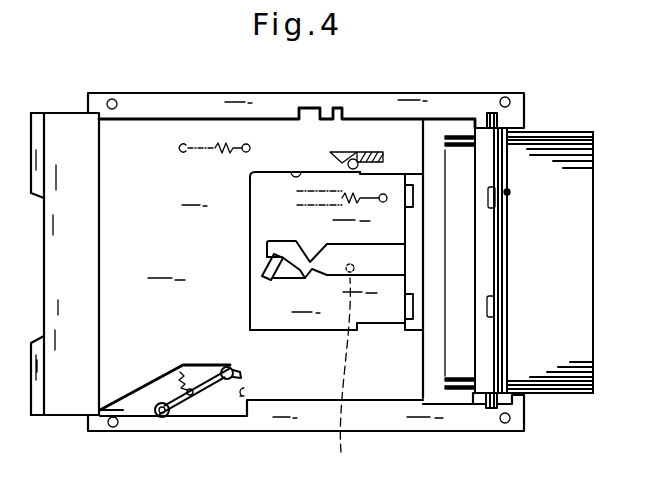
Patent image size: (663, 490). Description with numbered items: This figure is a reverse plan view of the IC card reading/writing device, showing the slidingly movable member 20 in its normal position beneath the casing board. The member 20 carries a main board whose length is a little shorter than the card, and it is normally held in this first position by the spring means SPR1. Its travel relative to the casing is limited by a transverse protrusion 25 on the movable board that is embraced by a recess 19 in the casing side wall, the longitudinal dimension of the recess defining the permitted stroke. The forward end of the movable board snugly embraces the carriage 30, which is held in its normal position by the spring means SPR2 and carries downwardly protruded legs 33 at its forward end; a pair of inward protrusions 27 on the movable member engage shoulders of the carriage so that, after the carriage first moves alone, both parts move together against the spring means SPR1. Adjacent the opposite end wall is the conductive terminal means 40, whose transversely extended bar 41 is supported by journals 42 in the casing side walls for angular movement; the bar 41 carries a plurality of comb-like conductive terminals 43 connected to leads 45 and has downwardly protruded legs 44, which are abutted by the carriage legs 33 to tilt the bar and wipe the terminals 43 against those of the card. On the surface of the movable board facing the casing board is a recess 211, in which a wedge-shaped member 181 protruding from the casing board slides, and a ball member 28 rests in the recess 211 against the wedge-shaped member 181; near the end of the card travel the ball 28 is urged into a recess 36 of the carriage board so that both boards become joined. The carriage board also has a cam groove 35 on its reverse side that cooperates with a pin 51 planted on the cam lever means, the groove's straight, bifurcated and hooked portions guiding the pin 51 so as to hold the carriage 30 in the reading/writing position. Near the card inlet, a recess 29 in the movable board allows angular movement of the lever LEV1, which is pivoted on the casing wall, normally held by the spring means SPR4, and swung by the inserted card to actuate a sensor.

The slidingly movable member 20 is at (64, 418).
The spring means SPR1 is at (197, 140).
The spring means SPR2 is at (345, 192).
The transverse protrusion 25 is at (306, 107).
The recess 19 is at (337, 107).
The ball member 28 is at (357, 160).
The recess 211 is at (341, 154).
The wedge-shaped member 181 is at (383, 157).
The conductive terminals 43 is at (452, 136).
The journals 42 is at (490, 114).
The transverse bar 41 is at (498, 136).
The leads 45 is at (587, 150).
The conductive terminal means 40 is at (507, 192).
The downwardly protruded legs 44 is at (496, 203).
The carriage 30 is at (319, 333).
The inward protrusions 27 is at (413, 196).
The downwardly protruded legs 33 is at (410, 293).
The recess 36 is at (292, 177).
The cam groove 35 is at (318, 282).
The pin 51 is at (344, 372).
The lever LEV1 is at (173, 407).
The spring means SPR4 is at (178, 373).
The recess 29 is at (245, 392).